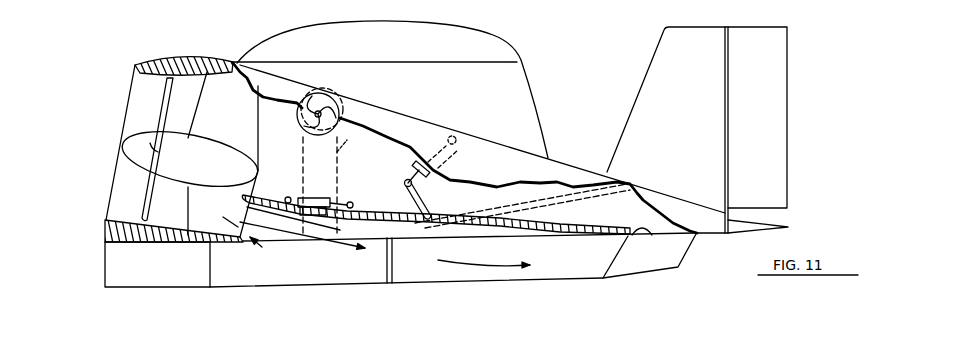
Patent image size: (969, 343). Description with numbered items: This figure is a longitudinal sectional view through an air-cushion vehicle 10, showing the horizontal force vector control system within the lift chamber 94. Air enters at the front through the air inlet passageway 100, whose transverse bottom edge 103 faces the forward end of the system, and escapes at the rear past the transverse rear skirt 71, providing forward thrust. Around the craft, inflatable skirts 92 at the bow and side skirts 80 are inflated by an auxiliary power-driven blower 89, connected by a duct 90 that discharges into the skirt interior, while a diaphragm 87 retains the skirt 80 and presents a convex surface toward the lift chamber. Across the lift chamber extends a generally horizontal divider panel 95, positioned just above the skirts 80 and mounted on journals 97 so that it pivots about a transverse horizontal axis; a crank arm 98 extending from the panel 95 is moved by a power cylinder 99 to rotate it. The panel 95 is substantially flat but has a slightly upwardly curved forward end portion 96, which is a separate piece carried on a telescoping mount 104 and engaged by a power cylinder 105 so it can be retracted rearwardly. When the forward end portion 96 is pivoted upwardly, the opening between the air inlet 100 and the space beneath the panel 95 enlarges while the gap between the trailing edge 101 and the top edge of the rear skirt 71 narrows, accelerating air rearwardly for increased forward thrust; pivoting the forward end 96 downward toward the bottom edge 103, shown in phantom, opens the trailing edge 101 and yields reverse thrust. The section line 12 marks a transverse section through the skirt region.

The aircraft 10 is at (125, 50).
The air inlet passageway 100 is at (133, 108).
The transverse bottom edge of the air inlet passageway 103 is at (240, 242).
The skirt 92 is at (150, 287).
The diaphragm 87 is at (557, 273).
The skirt 80 is at (282, 285).
The journal 97 is at (417, 238).
The rear skirt 71 is at (640, 276).
The forward end portion of the divider panel 96 is at (243, 197).
The divider panel 95 is at (474, 233).
The trailing edge of the divider panel 101 is at (628, 182).
The auxiliary power-driven blower 89 is at (298, 114).
The duct 90 is at (337, 146).
The lift chamber 94 is at (390, 180).
The power cylinder 105 is at (307, 197).
The telescoping mount 104 is at (315, 198).
The power cylinder 99 is at (422, 163).
The crank arm 98 is at (422, 197).
The section line 12- 12 is at (472, 138).